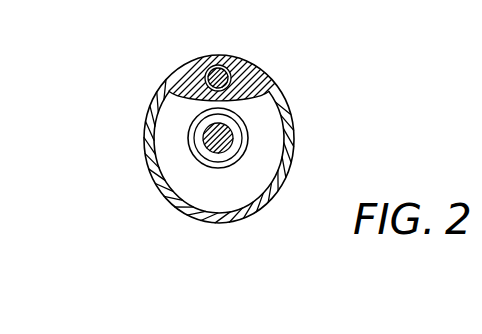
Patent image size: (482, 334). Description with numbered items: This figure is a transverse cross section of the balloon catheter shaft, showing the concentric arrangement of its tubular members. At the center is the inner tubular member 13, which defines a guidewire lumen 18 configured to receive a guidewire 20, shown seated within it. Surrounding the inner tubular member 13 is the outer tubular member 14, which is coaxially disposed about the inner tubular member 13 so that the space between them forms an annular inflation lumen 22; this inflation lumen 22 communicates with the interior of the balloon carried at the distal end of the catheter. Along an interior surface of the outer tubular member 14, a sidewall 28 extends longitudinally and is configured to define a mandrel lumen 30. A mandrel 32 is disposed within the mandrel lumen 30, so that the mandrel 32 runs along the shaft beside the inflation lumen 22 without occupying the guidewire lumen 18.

The inner tubular member 13 is at (247, 138).
The outer tubular member 14 is at (288, 86).
The guidewire lumen 18 is at (221, 155).
The guidewire 20 is at (204, 140).
The annular inflation lumen 22 is at (152, 133).
The sidewall 28 is at (196, 95).
The mandrel lumen 30 is at (231, 70).
The mandrel 32 is at (218, 66).